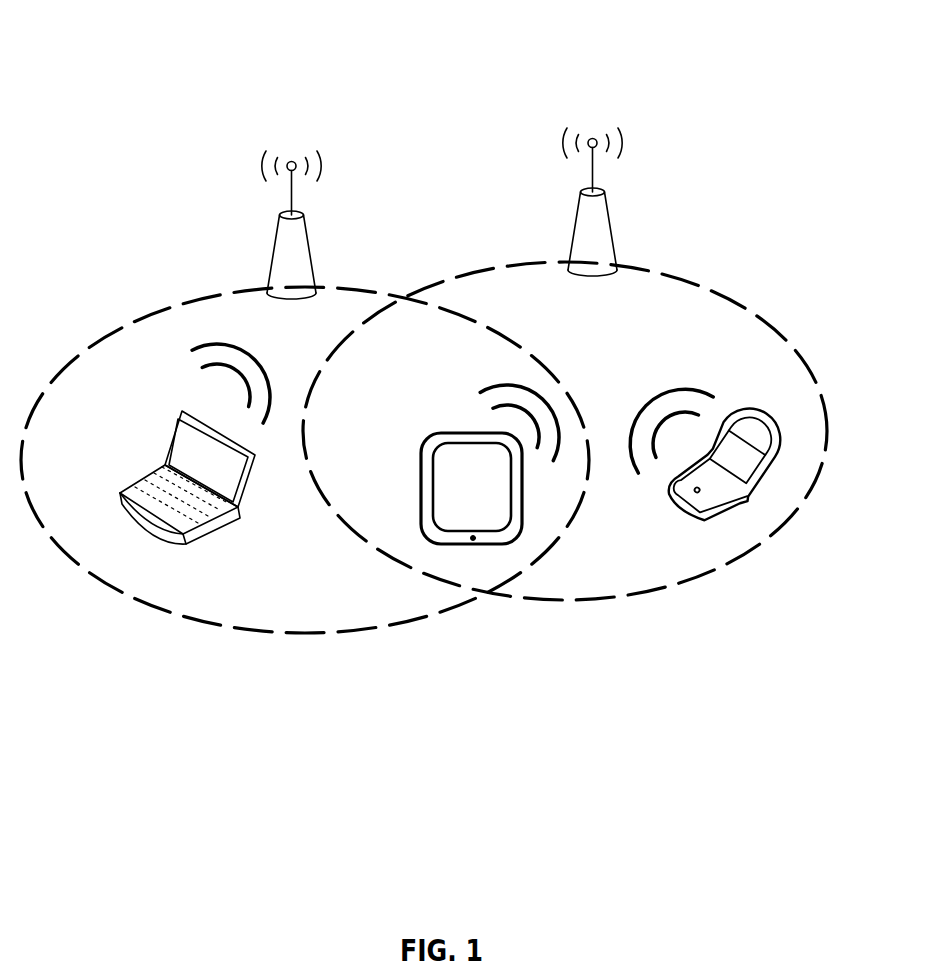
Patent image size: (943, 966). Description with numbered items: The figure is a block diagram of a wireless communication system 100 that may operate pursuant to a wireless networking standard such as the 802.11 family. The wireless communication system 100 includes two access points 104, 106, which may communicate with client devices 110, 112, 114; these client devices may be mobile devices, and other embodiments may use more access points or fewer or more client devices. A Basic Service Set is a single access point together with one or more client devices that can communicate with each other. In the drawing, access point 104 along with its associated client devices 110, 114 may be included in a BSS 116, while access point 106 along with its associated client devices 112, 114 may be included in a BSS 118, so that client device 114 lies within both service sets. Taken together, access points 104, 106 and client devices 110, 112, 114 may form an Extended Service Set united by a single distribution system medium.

The wireless communication system 100 is at (138, 46).
The access point 104 is at (336, 191).
The access point 106 is at (632, 171).
The client device 110 is at (169, 444).
The client device 112 is at (708, 444).
The client device 114 is at (455, 459).
The BSS 116 is at (305, 447).
The BSS 118 is at (572, 425).